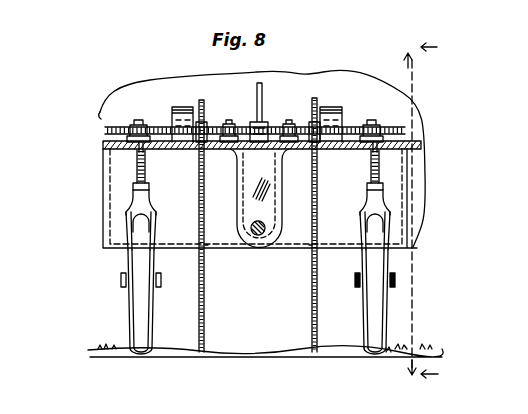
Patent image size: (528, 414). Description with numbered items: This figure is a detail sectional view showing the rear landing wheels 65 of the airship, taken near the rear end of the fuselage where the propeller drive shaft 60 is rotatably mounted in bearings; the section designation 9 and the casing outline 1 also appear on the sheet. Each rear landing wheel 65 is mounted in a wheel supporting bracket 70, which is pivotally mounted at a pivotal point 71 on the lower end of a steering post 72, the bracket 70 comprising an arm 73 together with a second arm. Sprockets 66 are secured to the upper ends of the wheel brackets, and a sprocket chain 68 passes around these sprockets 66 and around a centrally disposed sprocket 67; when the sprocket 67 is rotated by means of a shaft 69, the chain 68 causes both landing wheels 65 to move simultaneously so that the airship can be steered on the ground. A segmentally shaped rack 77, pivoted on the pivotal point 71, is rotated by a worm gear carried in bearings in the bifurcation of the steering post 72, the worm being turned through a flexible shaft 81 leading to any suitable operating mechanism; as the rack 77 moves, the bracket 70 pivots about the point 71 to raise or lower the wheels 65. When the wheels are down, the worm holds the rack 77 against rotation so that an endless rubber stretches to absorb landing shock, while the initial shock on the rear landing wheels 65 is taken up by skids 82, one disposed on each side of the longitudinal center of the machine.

The casing 1 is at (416, 134).
The section line 9 is at (418, 217).
The propeller drive shaft 60 is at (258, 236).
The rear landing wheels 65 is at (371, 352).
The sprockets 66 is at (388, 124).
The centrally disposed sprocket 67 is at (266, 126).
The sprocket chain 68 is at (159, 124).
The shaft 69 is at (261, 86).
The brackets 70 is at (390, 262).
The pivotal point 71 is at (389, 200).
The steering post 72 is at (382, 162).
The arm 73 is at (391, 224).
The segmentally shaped rack 77 is at (384, 184).
The flexible shaft 81 is at (370, 152).
The skids 82 is at (313, 348).